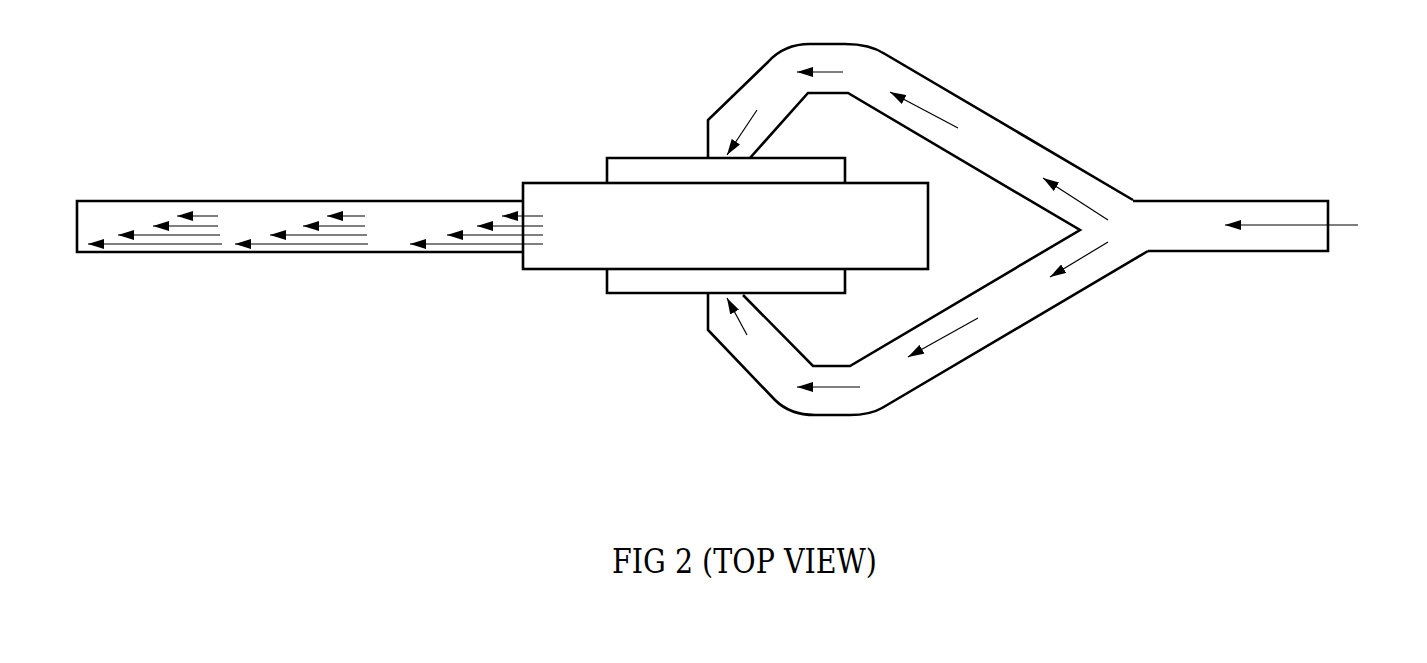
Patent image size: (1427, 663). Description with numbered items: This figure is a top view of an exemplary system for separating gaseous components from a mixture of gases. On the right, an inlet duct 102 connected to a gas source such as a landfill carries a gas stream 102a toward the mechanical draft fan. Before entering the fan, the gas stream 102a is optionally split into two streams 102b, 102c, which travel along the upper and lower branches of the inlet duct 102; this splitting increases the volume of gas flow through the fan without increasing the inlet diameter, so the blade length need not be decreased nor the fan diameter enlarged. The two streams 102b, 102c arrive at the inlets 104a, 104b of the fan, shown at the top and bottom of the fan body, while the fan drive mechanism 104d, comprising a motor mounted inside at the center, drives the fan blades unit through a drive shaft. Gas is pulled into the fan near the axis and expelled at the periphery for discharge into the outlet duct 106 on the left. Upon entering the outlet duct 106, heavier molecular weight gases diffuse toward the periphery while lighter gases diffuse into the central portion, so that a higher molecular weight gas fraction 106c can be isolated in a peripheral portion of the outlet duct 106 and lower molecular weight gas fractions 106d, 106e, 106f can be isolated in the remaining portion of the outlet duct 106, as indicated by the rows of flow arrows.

The inlet duct 102 is at (1018, 122).
The gas stream 102a is at (1282, 225).
The first split stream 102b is at (1078, 198).
The second split stream 102c is at (1088, 255).
The first inlet of mechanical draft fan 104a is at (718, 160).
The second inlet of mechanical draft fan 104b is at (717, 297).
The fan drive mechanism 104d is at (612, 165).
The outlet duct 106 is at (465, 195).
The higher molecular weight gas fraction 106c is at (245, 248).
The lower molecular weight gas fraction 106d is at (303, 233).
The lower molecular weight gas fraction 106e is at (365, 225).
The lower molecular weight gas fraction 106f is at (353, 210).